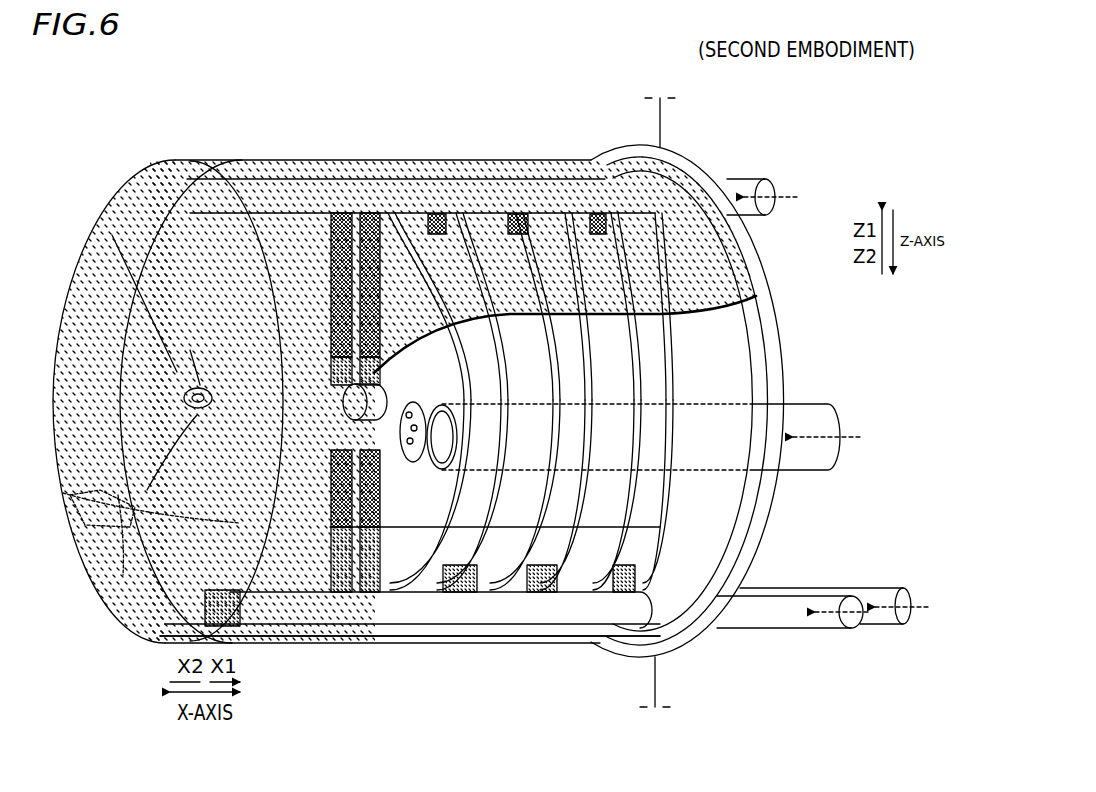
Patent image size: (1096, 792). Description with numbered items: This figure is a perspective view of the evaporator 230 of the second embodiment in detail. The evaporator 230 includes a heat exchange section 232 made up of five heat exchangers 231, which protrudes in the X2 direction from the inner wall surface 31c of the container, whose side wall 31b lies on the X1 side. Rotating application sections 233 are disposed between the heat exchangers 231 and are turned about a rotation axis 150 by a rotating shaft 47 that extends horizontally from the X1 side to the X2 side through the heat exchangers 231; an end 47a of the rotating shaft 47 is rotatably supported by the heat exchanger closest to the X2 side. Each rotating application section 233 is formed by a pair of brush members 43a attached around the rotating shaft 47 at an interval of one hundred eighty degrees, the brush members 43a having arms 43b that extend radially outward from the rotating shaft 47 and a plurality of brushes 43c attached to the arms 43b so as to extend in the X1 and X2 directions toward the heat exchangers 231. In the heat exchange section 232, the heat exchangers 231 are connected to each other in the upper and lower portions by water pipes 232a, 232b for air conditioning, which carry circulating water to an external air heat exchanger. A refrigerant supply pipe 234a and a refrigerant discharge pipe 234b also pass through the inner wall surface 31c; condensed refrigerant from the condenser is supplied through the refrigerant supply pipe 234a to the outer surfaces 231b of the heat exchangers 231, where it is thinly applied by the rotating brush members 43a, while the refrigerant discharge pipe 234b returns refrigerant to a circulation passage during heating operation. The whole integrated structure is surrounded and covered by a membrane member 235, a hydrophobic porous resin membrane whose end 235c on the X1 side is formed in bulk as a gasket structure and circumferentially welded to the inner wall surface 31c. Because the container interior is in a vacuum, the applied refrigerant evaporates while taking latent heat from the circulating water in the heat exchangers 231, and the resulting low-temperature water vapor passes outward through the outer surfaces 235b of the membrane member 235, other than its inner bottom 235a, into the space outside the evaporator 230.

The evaporator 230 is at (747, 117).
The membrane member 235 is at (70, 266).
The inner bottom 235a is at (137, 641).
The outer surfaces 235b is at (118, 198).
The end 235c is at (755, 303).
The rotation axis 150 is at (105, 230).
The heat exchangers 231 is at (188, 213).
The outer surfaces 231b is at (383, 620).
The heat exchange section 232 is at (163, 108).
The water pipe for air conditioning 232a is at (782, 192).
The water pipe for air conditioning 232b is at (783, 586).
The rotating application sections 233 is at (275, 292).
The brush members 43a is at (360, 620).
The arms 43b is at (352, 213).
The brushes 43c is at (335, 230).
The refrigerant supply pipe 234a is at (795, 403).
The refrigerant discharge pipe 234b is at (760, 622).
The side wall 31b is at (765, 272).
The inner wall surface 31c is at (623, 152).
The rotating shaft 47 is at (100, 586).
The end 47a is at (120, 560).